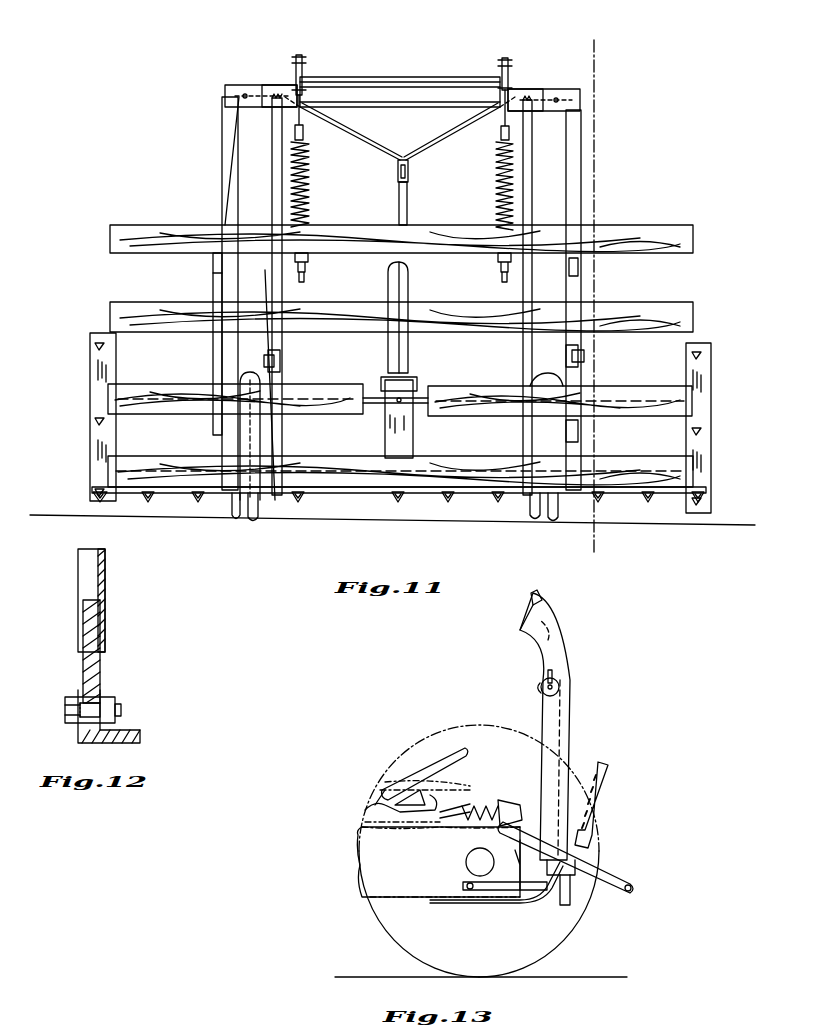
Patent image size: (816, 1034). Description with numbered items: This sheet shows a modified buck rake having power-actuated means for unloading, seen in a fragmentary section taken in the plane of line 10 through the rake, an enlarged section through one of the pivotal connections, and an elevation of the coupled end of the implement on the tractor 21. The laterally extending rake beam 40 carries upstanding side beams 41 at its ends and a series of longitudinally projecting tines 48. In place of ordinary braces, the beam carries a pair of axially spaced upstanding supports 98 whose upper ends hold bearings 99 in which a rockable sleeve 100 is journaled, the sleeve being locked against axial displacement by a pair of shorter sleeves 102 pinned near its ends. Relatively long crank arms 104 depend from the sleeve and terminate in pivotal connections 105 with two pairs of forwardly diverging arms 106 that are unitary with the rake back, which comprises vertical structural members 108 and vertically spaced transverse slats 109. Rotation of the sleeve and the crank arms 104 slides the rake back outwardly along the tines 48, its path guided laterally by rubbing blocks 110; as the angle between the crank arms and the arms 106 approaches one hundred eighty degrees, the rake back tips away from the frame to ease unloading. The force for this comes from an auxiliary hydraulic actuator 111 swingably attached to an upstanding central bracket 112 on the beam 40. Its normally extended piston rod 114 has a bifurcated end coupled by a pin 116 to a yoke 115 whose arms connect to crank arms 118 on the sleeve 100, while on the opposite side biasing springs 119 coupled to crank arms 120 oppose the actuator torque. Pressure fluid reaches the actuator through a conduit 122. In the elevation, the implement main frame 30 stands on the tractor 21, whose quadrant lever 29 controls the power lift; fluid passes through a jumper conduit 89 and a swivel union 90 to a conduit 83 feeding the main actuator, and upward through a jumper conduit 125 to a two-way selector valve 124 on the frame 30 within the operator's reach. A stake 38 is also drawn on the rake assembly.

In FIG. 11, the section line 10 is at (610, 43).
In FIG. 13, the tractor 21 is at (352, 867).
In FIG. 13, the quadrant lever 29 is at (385, 800).
In FIG. 13, the main frame 30 is at (555, 747).
In FIG. 11, the stake 38 is at (252, 378).
In FIG. 11, the rake beam 40 is at (182, 498).
In FIG. 11, the side beams 41 is at (90, 370).
In FIG. 11, the rake tines 48 is at (248, 503).
In FIG. 13, the conduit 83 is at (542, 597).
In FIG. 13, the jumper conduit 89 is at (500, 905).
In FIG. 13, the swivel union 90 is at (612, 896).
In FIG. 11, the upstanding supports 98 is at (273, 200).
In FIG. 11, the bearings 99 is at (274, 85).
In FIG. 11, the rockable sleeve 100 is at (372, 97).
In FIG. 11, the shorter sleeves 102 is at (232, 85).
In FIG. 11, the crank arms 104 is at (222, 143).
In FIG. 12, the crank arms 104 is at (105, 583).
In FIG. 11, the pivotal connections 105 is at (585, 357).
In FIG. 12, the pivotal connections 105 is at (121, 712).
In FIG. 11, the forwardly diverging arms 106 is at (213, 277).
In FIG. 12, the forwardly diverging arms 106 is at (130, 733).
In FIG. 11, the vertical structural members 108 is at (560, 375).
In FIG. 11, the transverse slats 109 is at (688, 255).
In FIG. 11, the rubbing blocks 110 is at (244, 503).
In FIG. 11, the auxiliary hydraulic actuator 111 is at (407, 365).
In FIG. 11, the bracket 112 is at (387, 428).
In FIG. 11, the piston rod 114 is at (398, 213).
In FIG. 11, the yoke 115 is at (380, 138).
In FIG. 11, the pin 116 is at (397, 175).
In FIG. 11, the crank arms 118 is at (300, 55).
In FIG. 11, the biasing springs 119 is at (311, 176).
In FIG. 11, the crank arms 120 is at (303, 128).
In FIG. 13, the conduit 122 is at (528, 600).
In FIG. 13, the two-way valve 124 is at (562, 687).
In FIG. 13, the jumper conduit 125 is at (572, 735).